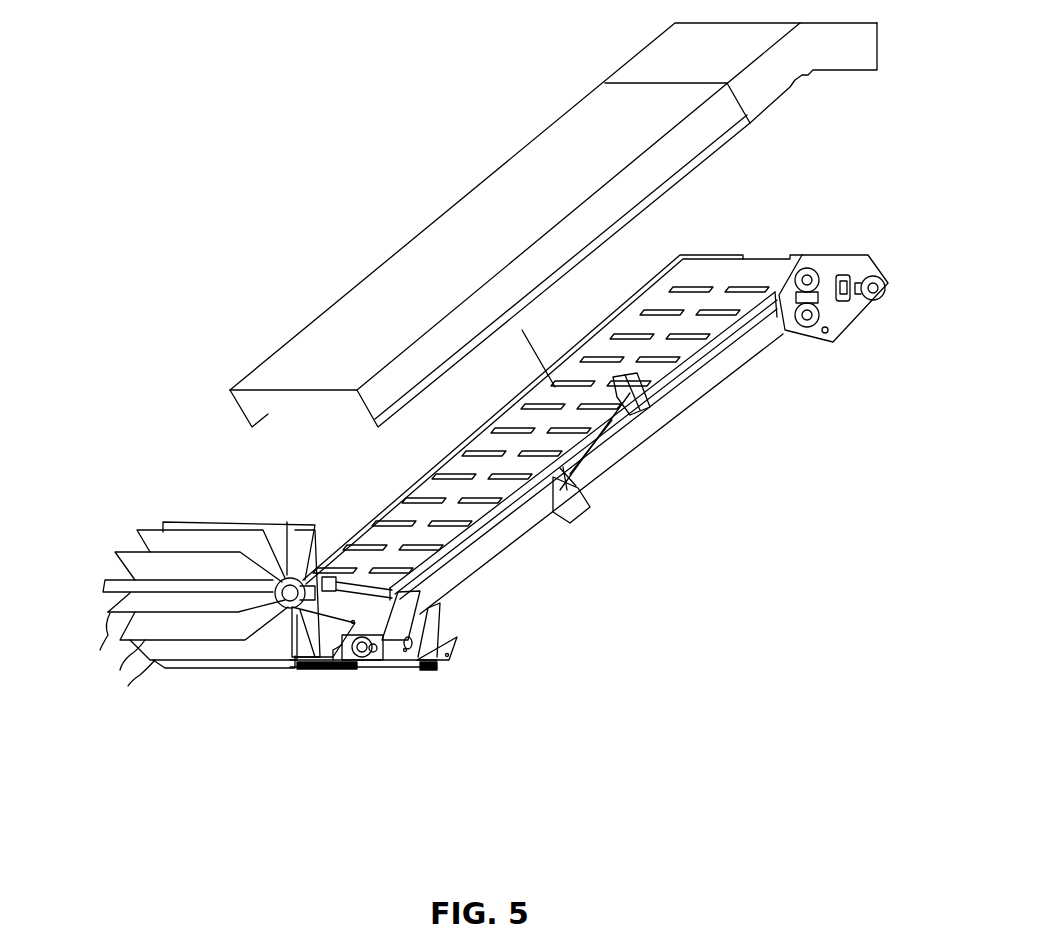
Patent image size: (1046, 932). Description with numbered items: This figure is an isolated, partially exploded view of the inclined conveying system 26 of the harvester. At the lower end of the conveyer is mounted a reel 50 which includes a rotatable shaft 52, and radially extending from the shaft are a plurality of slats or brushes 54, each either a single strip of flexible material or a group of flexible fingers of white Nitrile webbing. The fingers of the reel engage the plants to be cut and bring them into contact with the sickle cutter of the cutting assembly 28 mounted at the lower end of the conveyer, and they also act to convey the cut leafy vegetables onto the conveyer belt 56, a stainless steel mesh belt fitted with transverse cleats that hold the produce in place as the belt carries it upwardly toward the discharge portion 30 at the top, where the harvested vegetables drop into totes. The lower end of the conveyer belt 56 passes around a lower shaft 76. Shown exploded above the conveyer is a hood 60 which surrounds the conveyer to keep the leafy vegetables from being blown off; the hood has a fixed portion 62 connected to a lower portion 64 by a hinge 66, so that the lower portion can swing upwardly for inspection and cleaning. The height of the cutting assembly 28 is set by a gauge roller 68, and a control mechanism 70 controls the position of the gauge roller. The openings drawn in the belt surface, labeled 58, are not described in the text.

The conveying system 26 is at (192, 301).
The cutting assembly 28 is at (357, 671).
The discharge portion 30 is at (877, 40).
The reel 50 is at (104, 593).
The rotatable shaft 52 is at (311, 572).
The slats or brushes 54 is at (128, 668).
The conveyer belt 56 is at (707, 363).
The slots 58 is at (517, 418).
The hood 60 is at (472, 183).
The fixed portion 62 is at (643, 62).
The lower portion 64 is at (358, 282).
The hinge 66 is at (620, 82).
The gauge roller 68 is at (432, 670).
The control mechanism 70 is at (444, 616).
The lower shaft 76 is at (383, 670).